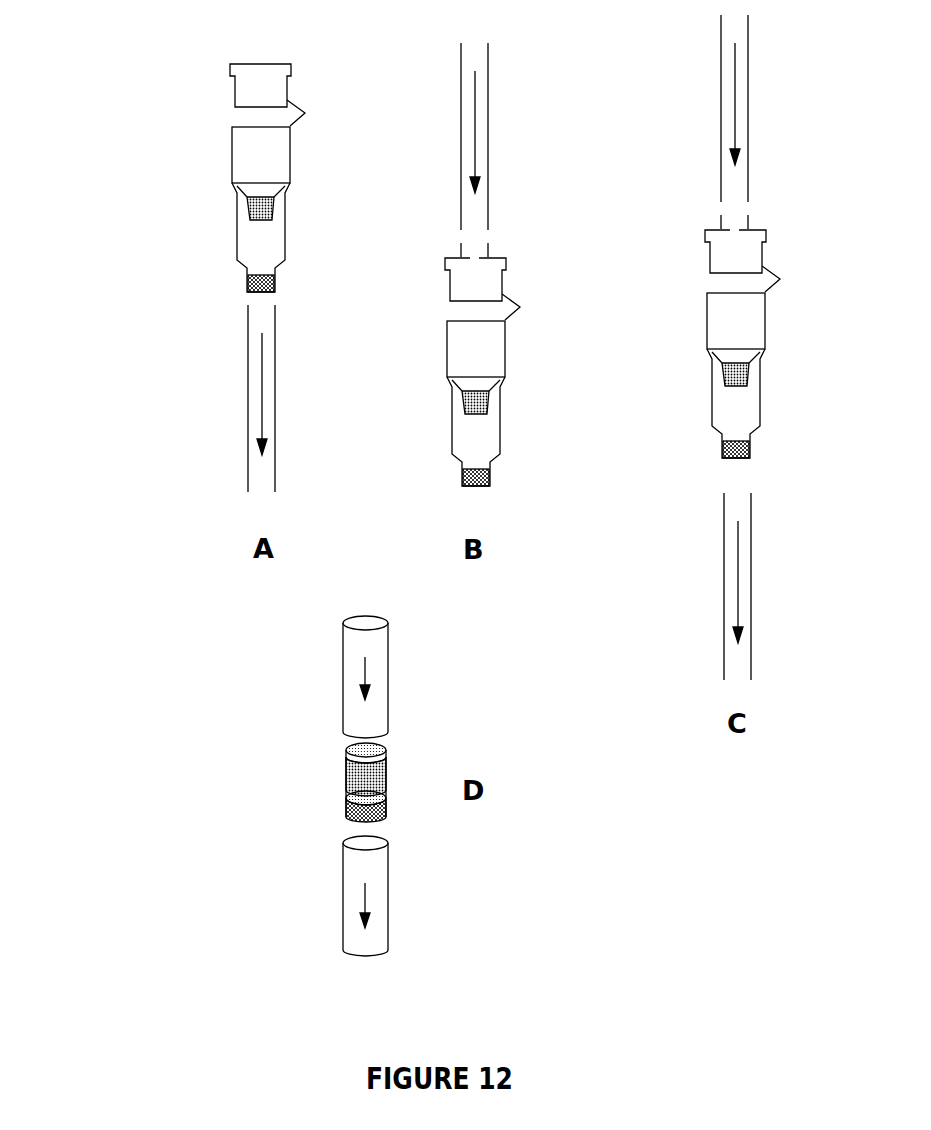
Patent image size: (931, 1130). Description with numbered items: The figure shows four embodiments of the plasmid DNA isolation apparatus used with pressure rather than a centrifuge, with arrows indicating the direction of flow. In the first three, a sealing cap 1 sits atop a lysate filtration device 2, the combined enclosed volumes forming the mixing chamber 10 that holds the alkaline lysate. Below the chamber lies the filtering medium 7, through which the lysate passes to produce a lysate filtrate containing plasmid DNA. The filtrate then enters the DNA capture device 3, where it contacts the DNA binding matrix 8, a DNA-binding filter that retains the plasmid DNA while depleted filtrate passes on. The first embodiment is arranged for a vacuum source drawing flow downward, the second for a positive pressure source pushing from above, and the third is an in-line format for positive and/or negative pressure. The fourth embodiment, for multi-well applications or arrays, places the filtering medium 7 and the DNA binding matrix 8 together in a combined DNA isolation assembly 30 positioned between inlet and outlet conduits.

The sealing cap 1 is at (233, 88).
The mixing chamber 10 is at (263, 148).
The lysate filtration device 2 is at (184, 116).
The filtering medium 7 is at (248, 200).
The DNA capture device 3 is at (233, 239).
The DNA binding matrix 8 is at (250, 287).
The combined DNA isolation assembly 30 is at (340, 750).